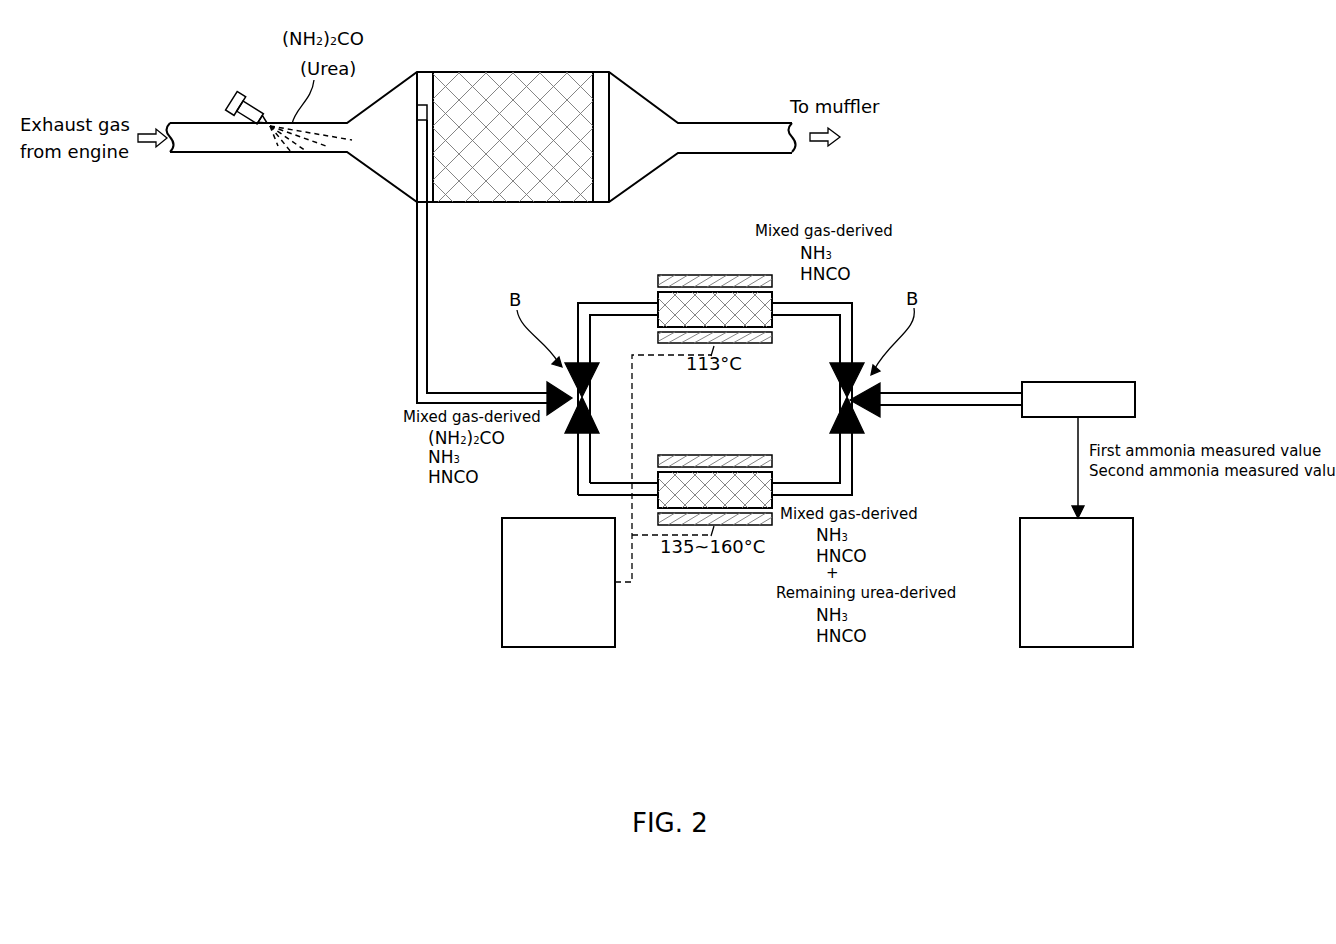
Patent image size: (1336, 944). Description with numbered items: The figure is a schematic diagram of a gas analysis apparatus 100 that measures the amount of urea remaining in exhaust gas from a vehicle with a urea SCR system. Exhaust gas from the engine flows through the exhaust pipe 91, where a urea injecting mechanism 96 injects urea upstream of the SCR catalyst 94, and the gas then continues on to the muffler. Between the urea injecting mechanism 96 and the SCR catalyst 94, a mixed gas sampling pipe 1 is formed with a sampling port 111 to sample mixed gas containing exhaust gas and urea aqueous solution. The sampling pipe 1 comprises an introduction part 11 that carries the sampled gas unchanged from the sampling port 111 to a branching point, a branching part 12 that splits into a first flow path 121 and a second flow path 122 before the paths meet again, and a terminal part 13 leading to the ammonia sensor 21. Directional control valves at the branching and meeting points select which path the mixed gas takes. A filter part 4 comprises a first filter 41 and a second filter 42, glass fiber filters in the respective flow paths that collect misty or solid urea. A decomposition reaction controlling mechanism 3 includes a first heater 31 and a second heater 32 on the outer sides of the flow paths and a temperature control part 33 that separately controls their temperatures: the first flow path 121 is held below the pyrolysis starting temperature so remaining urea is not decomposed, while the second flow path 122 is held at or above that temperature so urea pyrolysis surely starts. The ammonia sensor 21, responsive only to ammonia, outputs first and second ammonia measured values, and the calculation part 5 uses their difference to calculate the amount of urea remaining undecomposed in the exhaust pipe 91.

The mixed gas sampling pipe 1 is at (391, 406).
The decomposition reaction controlling mechanism 3 is at (510, 661).
The filter part 4 is at (716, 400).
The calculation part 5 is at (1078, 648).
The introduction part 11 is at (410, 318).
The branching part 12 is at (721, 659).
The terminal part 13 is at (983, 379).
The ammonia sensor 21 is at (1095, 381).
The first heater 31 is at (683, 275).
The second heater 32 is at (688, 455).
The temperature control part 33 is at (558, 648).
The first filter 41 is at (755, 327).
The second filter 42 is at (716, 455).
The exhaust pipe 91 is at (383, 180).
The SCR catalyst 94 is at (513, 72).
The urea injecting mechanism 96 is at (246, 85).
The gas analysis apparatus 100 is at (890, 168).
The sampling port 111 is at (421, 118).
The first flow path 121 is at (627, 292).
The second flow path 122 is at (827, 477).